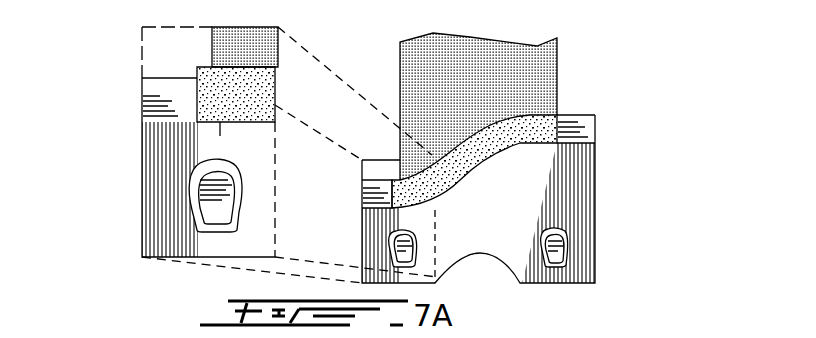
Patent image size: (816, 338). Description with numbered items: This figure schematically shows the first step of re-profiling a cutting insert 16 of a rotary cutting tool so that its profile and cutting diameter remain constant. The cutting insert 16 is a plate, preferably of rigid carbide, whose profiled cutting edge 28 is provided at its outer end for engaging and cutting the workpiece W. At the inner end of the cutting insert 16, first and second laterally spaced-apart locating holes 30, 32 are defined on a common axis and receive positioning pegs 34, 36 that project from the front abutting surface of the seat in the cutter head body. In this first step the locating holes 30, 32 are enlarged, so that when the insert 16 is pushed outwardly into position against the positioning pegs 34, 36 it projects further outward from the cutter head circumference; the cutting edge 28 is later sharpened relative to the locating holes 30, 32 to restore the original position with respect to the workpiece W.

The workpiece W is at (537, 70).
The cutting edge 28 is at (560, 113).
The cutting insert 16 is at (565, 184).
The first locating hole 30 is at (562, 224).
The positioning peg 34 is at (566, 250).
The second locating hole 32 is at (214, 168).
The positioning peg 36 is at (212, 199).